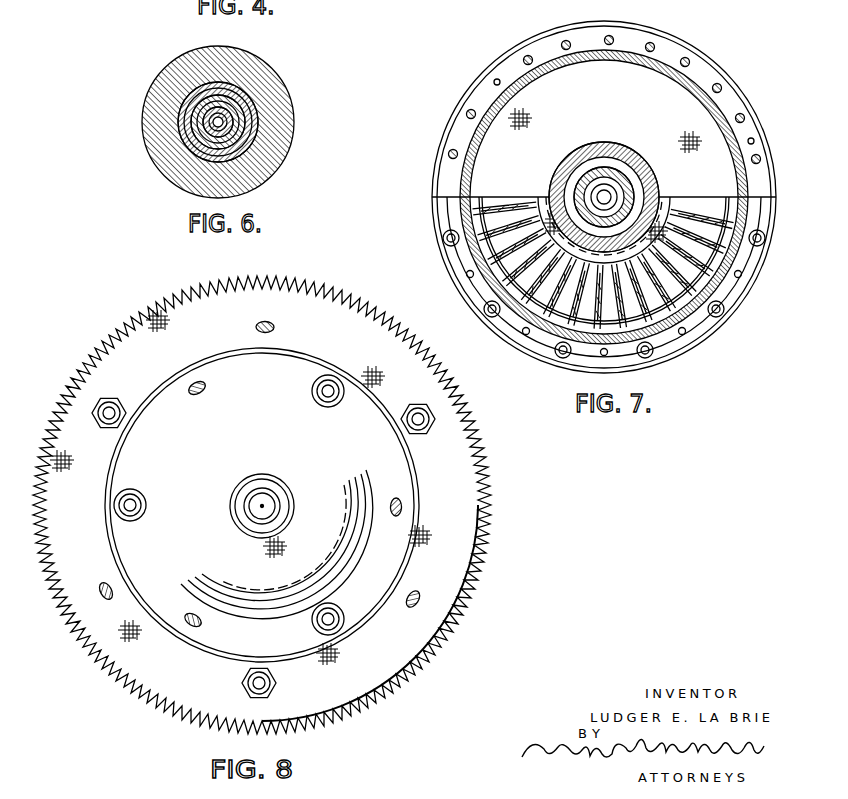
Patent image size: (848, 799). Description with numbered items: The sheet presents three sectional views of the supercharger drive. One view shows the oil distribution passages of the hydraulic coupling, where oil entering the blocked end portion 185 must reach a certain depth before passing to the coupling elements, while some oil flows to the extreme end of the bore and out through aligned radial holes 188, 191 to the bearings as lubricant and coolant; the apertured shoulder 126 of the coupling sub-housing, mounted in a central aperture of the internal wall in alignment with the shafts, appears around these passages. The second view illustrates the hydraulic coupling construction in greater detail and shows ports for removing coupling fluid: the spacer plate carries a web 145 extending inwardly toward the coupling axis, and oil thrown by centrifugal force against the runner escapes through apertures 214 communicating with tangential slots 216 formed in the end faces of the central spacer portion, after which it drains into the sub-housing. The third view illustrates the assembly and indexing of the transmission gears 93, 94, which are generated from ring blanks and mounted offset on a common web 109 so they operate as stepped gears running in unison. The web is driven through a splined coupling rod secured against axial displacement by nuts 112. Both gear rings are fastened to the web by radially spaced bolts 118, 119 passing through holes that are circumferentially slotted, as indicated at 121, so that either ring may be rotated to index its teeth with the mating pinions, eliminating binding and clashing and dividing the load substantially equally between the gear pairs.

In FIG. 8, the transmission gear 93 is at (485, 503).
In FIG. 8, the transmission gear 94 is at (460, 542).
In FIG. 8, the web 109 is at (262, 458).
In FIG. 8, the nuts 112 is at (279, 498).
In FIG. 8, the bolts 118 is at (147, 505).
In FIG. 8, the bolts 119 is at (118, 403).
In FIG. 8, the circumferentially slotted holes 121 is at (283, 327).
In FIG. 6, the apertured shoulder 126 is at (280, 117).
In FIG. 7, the web 145 is at (606, 136).
In FIG. 6, the blocked end portion 185 is at (173, 118).
In FIG. 6, the radial hole 188 is at (247, 80).
In FIG. 6, the radial hole 191 is at (215, 82).
In FIG. 7, the apertures 214 is at (563, 55).
In FIG. 7, the tangential slots 216 is at (606, 22).